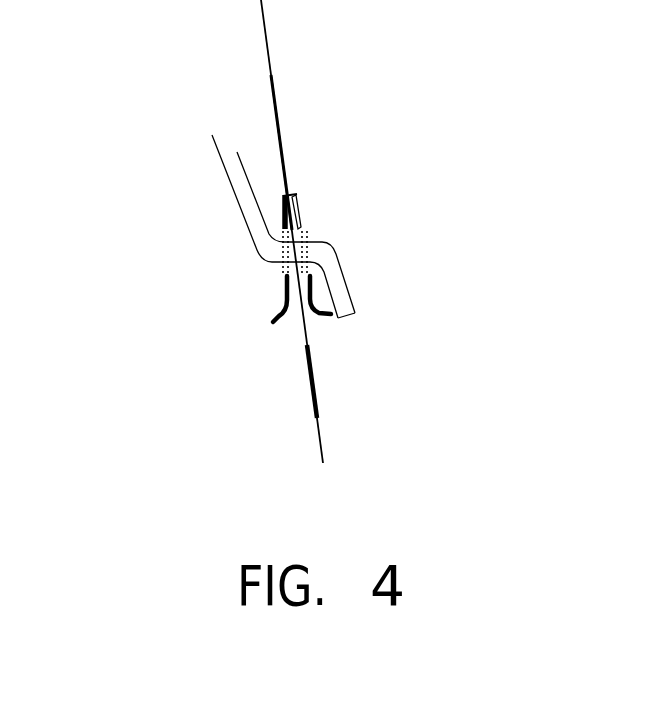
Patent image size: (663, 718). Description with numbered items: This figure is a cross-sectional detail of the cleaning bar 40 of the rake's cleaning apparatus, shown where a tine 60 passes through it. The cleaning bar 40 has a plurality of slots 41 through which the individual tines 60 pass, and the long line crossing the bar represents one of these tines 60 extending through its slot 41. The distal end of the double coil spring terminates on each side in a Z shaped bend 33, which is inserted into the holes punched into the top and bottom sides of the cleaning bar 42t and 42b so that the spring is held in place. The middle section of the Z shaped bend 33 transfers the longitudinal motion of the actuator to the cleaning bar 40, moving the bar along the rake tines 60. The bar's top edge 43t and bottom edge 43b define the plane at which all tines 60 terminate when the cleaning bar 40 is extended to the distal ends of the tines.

The Z shaped bend 33 is at (352, 275).
The cleaning bar 40 is at (298, 266).
The slots 41 is at (290, 192).
The bottom side hole of cleaning bar 42b is at (308, 236).
The top side hole of cleaning bar 42t is at (283, 268).
The bottom edge of cleaning bar 43b is at (335, 320).
The top edge of cleaning bar 43t is at (277, 317).
The tines 60 is at (330, 400).